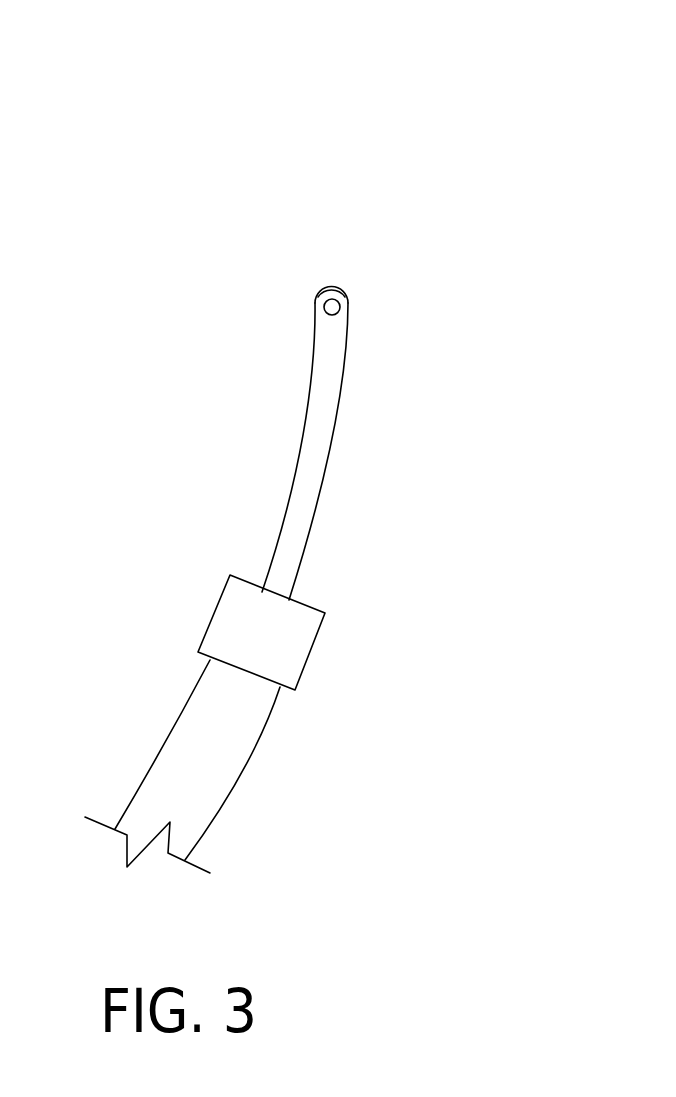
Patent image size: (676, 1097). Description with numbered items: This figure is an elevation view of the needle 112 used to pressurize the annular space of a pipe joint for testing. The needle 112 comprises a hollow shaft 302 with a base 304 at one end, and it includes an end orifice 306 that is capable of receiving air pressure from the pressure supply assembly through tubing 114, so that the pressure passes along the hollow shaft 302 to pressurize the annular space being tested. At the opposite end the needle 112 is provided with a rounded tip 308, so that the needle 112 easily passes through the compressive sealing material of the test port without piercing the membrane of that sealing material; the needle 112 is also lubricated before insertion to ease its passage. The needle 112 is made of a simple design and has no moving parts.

The needle 112 is at (228, 104).
The tubing 114 is at (243, 768).
The hollow shaft 302 is at (336, 440).
The base 304 is at (313, 657).
The end orifice 306 is at (341, 310).
The rounded tip 308 is at (331, 286).